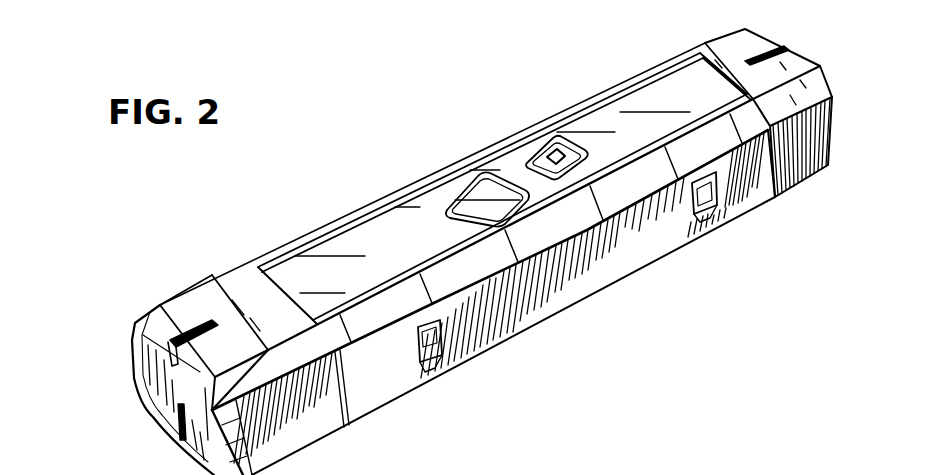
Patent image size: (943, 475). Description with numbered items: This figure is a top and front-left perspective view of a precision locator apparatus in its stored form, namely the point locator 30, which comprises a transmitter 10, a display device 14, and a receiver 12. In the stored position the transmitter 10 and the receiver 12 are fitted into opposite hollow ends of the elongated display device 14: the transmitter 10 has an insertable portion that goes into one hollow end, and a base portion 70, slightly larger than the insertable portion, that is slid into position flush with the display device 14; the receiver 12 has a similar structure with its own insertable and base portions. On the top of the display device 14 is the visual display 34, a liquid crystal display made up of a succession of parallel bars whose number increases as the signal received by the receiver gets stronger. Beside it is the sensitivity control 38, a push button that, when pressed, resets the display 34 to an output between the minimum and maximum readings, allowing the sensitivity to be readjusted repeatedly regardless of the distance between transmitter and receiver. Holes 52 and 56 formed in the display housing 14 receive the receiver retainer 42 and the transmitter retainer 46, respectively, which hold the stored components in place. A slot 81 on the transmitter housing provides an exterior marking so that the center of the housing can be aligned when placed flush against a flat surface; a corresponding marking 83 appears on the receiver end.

The transmitter 10 is at (793, 49).
The receiver 12 is at (166, 305).
The display device 14 is at (559, 319).
The point locator 30 is at (294, 202).
The visual display 34 is at (473, 186).
The sensitivity control 38 is at (552, 155).
The receiver retainer 42 is at (430, 370).
The transmitter retainer 46 is at (706, 212).
The hole 52 is at (441, 344).
The hole 56 is at (715, 192).
The base portion 70 is at (706, 50).
The slot 81 is at (760, 56).
The latch 83 is at (192, 340).